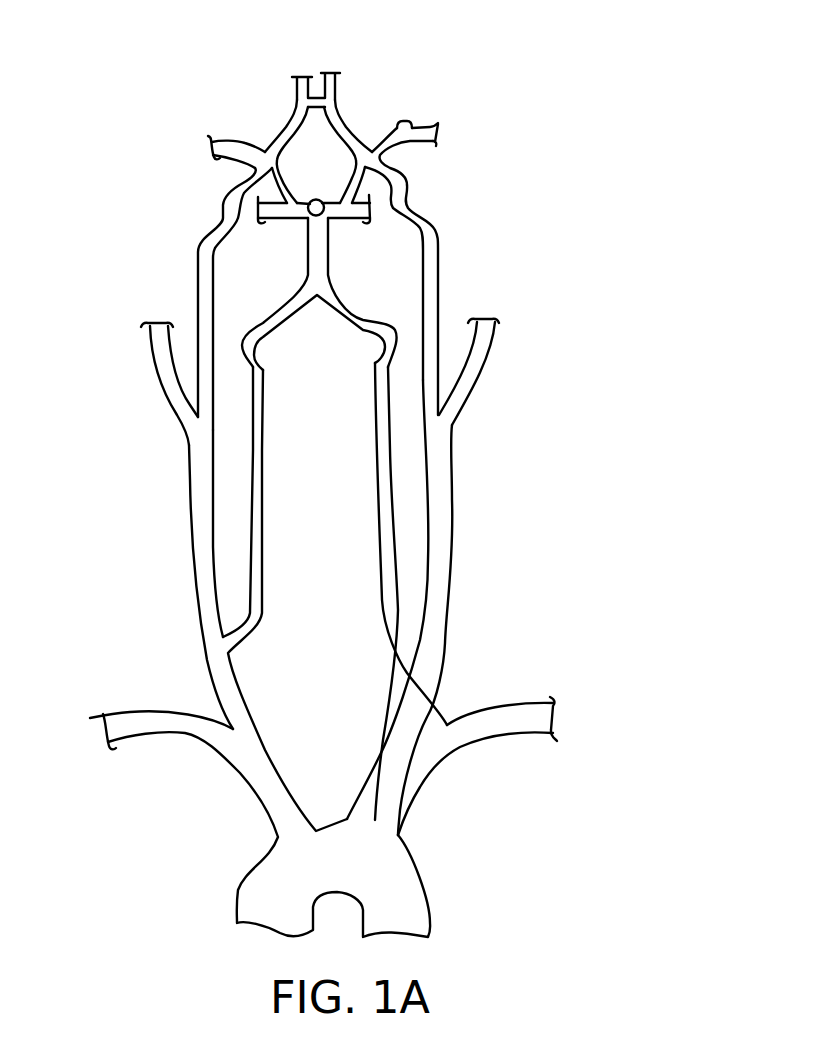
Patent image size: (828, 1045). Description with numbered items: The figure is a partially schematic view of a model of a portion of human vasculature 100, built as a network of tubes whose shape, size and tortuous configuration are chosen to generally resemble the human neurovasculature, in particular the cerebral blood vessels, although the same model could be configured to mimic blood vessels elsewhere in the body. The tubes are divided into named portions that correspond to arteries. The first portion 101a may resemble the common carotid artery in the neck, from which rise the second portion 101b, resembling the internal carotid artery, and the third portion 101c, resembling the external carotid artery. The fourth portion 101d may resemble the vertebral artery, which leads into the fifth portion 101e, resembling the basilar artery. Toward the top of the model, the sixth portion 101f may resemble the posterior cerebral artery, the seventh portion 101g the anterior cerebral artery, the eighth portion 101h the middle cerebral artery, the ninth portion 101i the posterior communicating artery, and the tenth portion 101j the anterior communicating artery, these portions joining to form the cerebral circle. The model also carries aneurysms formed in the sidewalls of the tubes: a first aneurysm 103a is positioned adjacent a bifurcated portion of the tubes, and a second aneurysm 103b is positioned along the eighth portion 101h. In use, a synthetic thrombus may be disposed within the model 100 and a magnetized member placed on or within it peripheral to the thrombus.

The model of a portion of human vasculature 100 is at (618, 220).
The first portion 101a is at (428, 296).
The second portion 101b is at (198, 255).
The third portion 101c is at (152, 363).
The fourth portion 101d is at (250, 553).
The fifth portion 101e is at (332, 258).
The sixth portion 101f is at (350, 216).
The seventh portion 101g is at (297, 90).
The eighth portion 101h is at (225, 141).
The ninth portion 101i is at (353, 183).
The tenth portion 101j is at (309, 98).
The first aneurysm 103a is at (317, 197).
The second aneurysm 103b is at (405, 120).